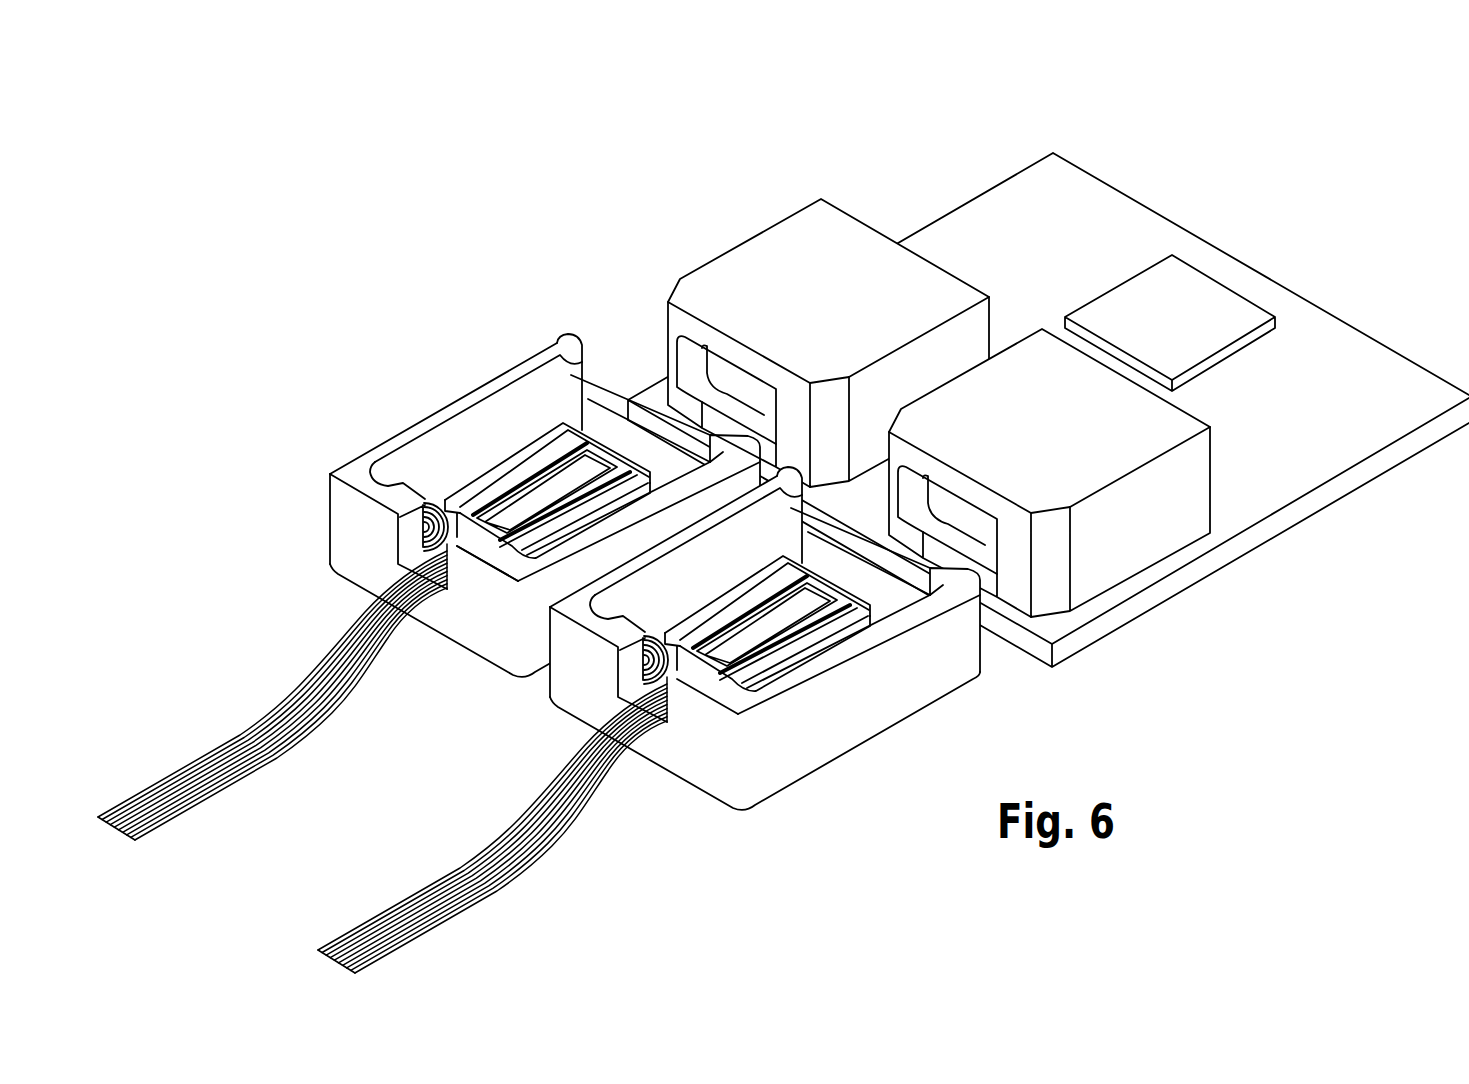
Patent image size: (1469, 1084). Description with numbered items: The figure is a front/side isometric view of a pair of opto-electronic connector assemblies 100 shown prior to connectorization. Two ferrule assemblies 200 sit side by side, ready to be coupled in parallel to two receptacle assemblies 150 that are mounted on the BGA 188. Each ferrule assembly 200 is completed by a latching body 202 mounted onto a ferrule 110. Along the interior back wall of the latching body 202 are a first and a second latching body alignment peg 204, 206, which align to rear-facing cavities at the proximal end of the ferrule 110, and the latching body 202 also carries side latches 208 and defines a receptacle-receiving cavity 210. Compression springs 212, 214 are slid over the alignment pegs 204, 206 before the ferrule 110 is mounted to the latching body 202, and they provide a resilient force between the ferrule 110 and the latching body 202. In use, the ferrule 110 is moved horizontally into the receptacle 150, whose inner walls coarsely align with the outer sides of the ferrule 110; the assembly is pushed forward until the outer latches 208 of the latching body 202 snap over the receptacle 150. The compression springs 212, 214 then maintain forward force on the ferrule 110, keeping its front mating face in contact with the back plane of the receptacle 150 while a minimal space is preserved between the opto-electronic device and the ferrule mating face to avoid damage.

The connector assembly 100 is at (783, 551).
The ferrule 110 is at (805, 655).
The receptacle assembly 150 is at (760, 231).
The BGA 188 is at (985, 213).
The ferrule assembly 200 is at (627, 620).
The latching body 202 is at (498, 368).
The first latching body alignment peg 204 is at (417, 532).
The second latching body alignment peg 206 is at (480, 553).
The side latches 208 is at (570, 350).
The receptacle-receiving cavity 210 is at (552, 522).
The compression spring 212 is at (437, 504).
The compression spring 214 is at (557, 553).